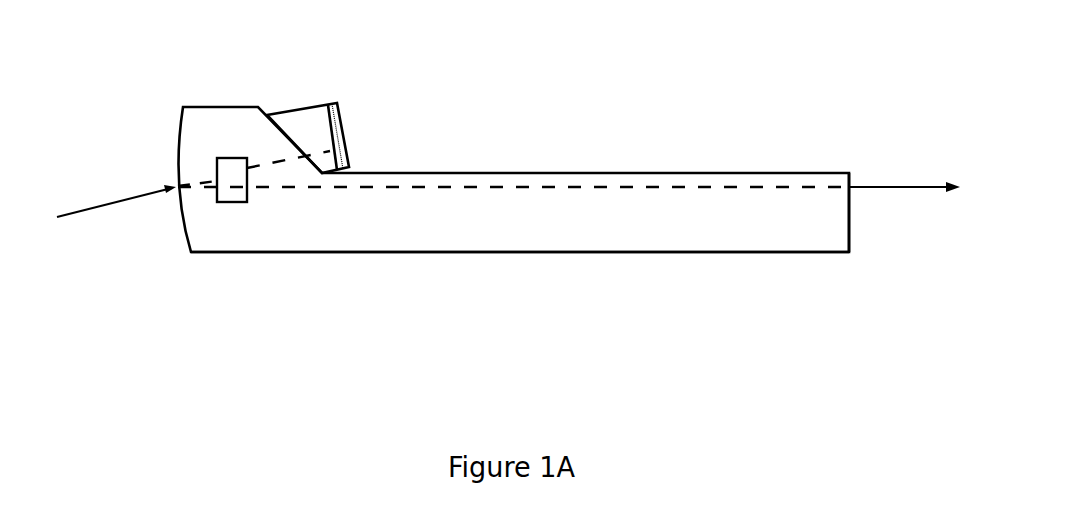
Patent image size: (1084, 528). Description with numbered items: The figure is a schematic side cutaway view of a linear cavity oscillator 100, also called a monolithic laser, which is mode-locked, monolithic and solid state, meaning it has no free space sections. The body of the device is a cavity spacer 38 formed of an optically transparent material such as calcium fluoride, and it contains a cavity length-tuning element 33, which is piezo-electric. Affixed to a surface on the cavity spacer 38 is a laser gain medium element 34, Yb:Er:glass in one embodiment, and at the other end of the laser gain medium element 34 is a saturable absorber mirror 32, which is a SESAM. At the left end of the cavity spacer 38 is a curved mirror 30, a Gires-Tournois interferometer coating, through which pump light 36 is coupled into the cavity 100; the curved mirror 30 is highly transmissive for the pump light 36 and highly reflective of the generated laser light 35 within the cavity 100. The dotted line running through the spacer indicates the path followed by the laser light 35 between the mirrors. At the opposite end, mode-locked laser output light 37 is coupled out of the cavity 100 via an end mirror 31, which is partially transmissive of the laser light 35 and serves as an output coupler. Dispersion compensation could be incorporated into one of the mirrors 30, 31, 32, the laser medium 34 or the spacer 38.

The linear cavity oscillator 100 is at (765, 113).
The curved mirror 30 is at (160, 203).
The end mirror 31 is at (856, 203).
The saturable absorber mirror 32 is at (337, 137).
The cavity length-tuning element 33 is at (232, 187).
The laser gain medium element 34 is at (308, 128).
The laser light 35 is at (265, 163).
The pump light 36 is at (110, 197).
The mode-locked laser output light 37 is at (904, 174).
The cavity spacer 38 is at (444, 230).